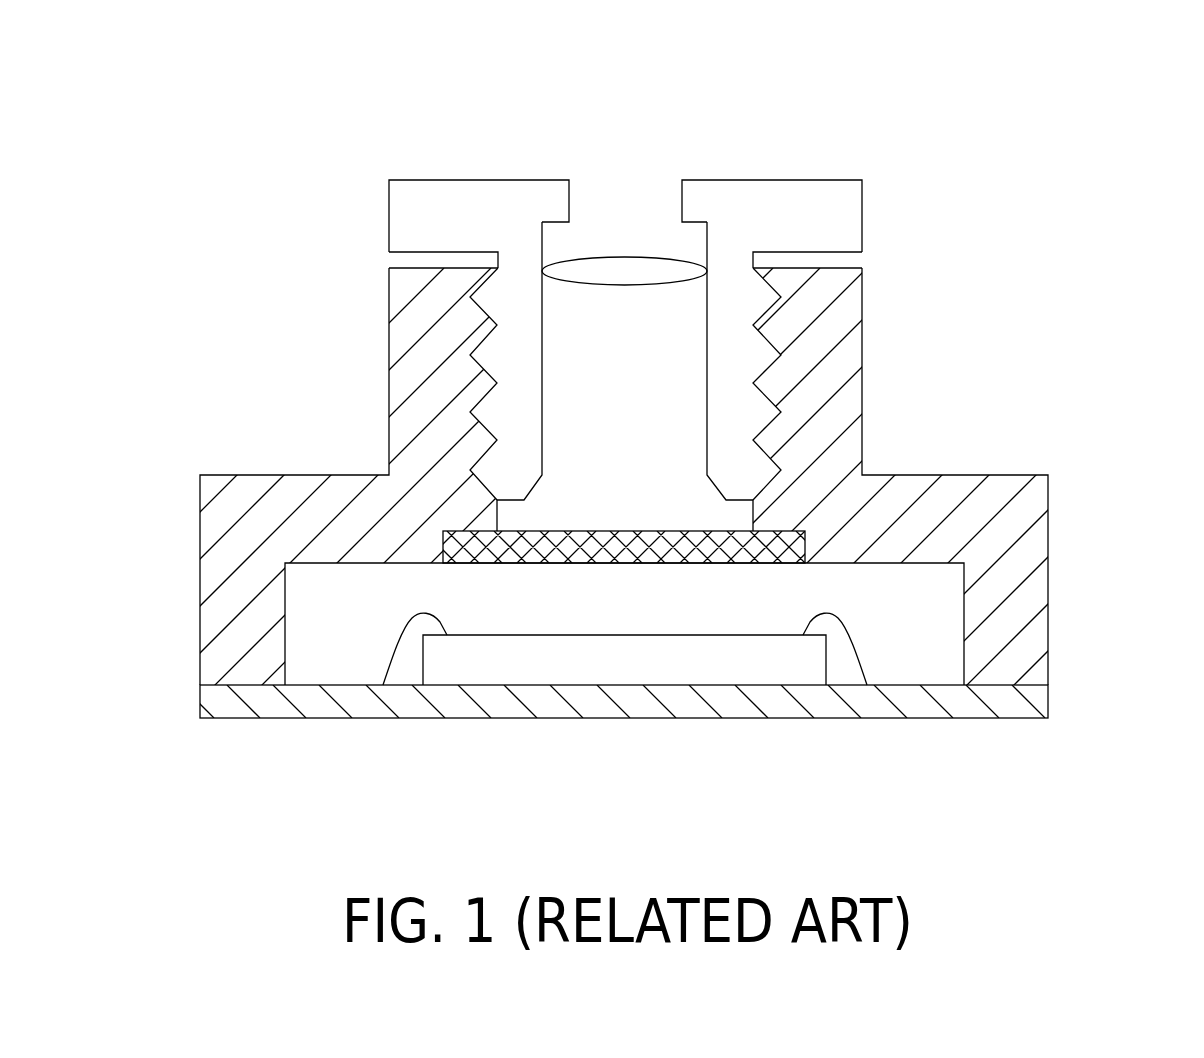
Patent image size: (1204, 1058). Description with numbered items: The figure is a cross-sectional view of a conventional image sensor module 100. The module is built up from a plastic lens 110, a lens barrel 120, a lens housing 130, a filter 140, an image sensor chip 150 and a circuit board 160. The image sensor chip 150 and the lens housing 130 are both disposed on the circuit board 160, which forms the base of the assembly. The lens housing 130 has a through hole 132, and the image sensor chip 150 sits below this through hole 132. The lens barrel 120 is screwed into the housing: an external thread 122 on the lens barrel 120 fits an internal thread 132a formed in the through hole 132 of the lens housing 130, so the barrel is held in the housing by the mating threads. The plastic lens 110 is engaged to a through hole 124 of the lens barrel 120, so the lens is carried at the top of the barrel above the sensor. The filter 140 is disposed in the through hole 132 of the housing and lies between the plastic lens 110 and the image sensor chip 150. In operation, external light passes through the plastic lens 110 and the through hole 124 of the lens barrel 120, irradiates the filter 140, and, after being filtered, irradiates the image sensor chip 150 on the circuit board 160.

The image sensor module 100 is at (234, 140).
The plastic lens 110 is at (641, 266).
The lens barrel 120 is at (837, 216).
The external thread 122 is at (758, 294).
The through hole 124 is at (545, 349).
The lens housing 130 is at (820, 398).
The through hole 132 is at (488, 311).
The internal thread 132a is at (773, 333).
The filter 140 is at (792, 547).
The image sensor chip 150 is at (758, 668).
The circuit board 160 is at (1020, 706).